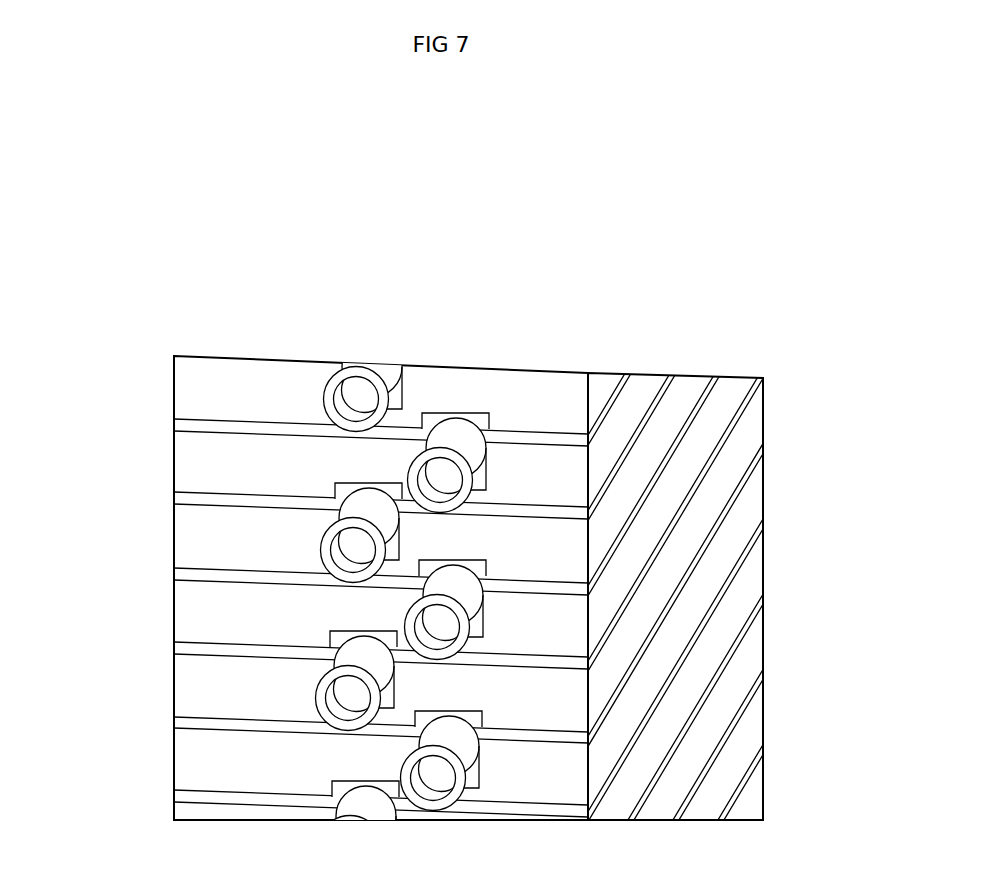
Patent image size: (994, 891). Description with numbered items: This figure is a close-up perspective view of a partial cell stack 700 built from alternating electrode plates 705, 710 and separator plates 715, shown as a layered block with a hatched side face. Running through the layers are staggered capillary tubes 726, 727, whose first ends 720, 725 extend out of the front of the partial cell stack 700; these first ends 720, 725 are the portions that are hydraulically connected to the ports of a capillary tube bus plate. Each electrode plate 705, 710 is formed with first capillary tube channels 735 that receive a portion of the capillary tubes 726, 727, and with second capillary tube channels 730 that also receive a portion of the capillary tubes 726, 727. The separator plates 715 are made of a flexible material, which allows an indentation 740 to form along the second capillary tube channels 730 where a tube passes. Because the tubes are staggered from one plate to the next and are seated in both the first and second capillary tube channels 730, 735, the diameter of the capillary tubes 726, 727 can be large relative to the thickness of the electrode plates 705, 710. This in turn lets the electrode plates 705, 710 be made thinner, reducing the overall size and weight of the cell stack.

The partial cell stack 700 is at (758, 287).
The electrode plate 705 is at (175, 465).
The electrode plate 710 is at (180, 542).
The separator plate 715 is at (175, 500).
The first end 720 is at (435, 452).
The first end 725 is at (323, 553).
The capillary tube 726 is at (463, 442).
The capillary tube 727 is at (388, 530).
The second capillary tube channel 730 is at (457, 413).
The first capillary tube channel 735 is at (472, 474).
The indentation 740 is at (362, 488).